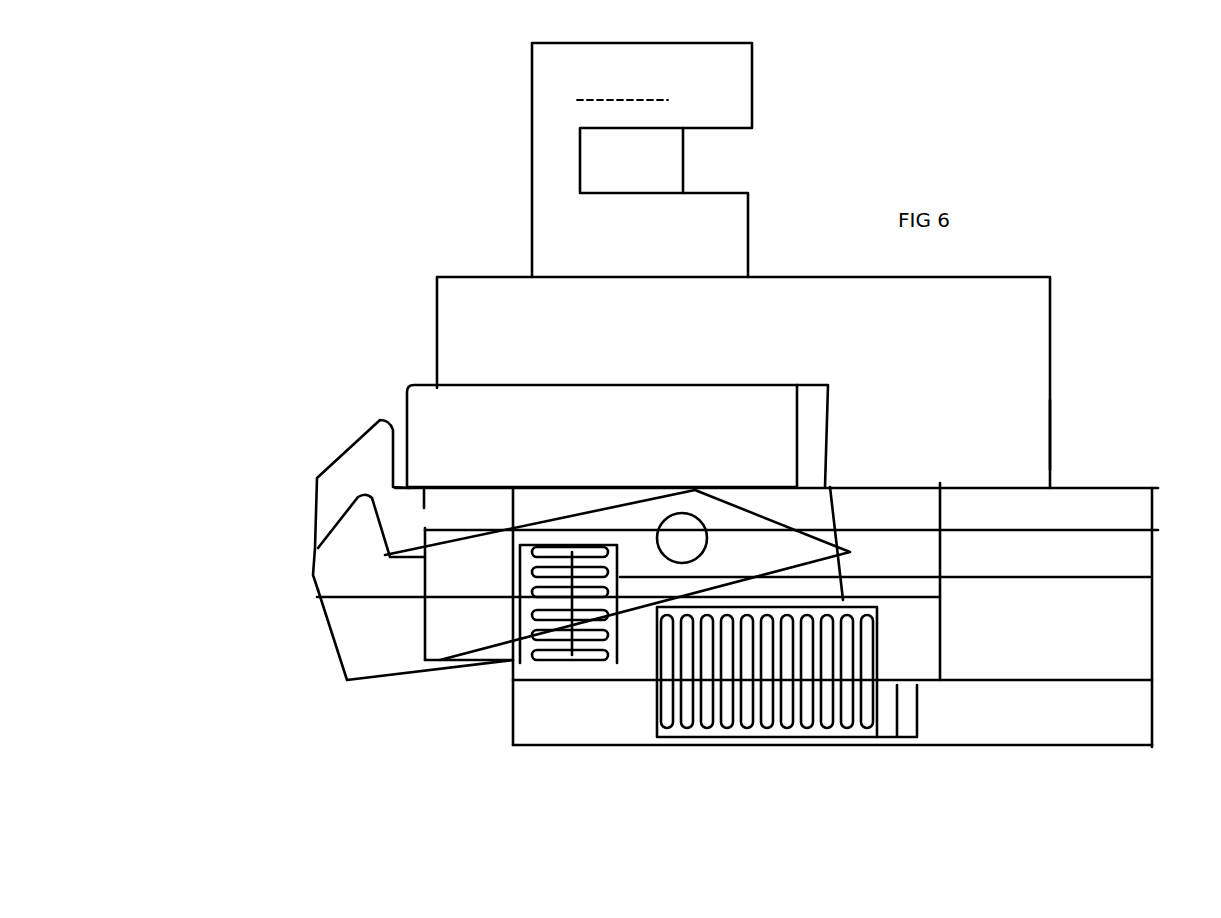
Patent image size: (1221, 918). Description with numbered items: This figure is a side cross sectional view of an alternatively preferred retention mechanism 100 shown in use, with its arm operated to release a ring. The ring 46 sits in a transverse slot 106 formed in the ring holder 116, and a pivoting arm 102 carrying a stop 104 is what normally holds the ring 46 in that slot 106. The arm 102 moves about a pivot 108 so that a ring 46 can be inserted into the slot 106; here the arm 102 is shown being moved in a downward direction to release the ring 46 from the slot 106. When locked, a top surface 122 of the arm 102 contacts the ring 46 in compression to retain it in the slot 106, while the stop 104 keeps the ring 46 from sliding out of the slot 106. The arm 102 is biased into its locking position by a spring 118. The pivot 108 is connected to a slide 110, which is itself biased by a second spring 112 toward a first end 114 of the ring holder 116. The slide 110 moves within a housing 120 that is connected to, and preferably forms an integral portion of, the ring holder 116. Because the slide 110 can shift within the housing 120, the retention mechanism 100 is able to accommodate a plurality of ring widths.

The retention mechanism 100 is at (425, 302).
The ring 46 is at (665, 432).
The pivoting arm 102 is at (440, 643).
The stop 104 is at (365, 453).
The transverse slot 106 is at (823, 397).
The pivot 108 is at (663, 512).
The slide 110 is at (500, 657).
The spring 112 is at (838, 735).
The first end 114 is at (1065, 470).
The ring holder 116 is at (1068, 422).
The spring 118 is at (560, 663).
The housing 120 is at (603, 733).
The top surface 122 is at (587, 507).